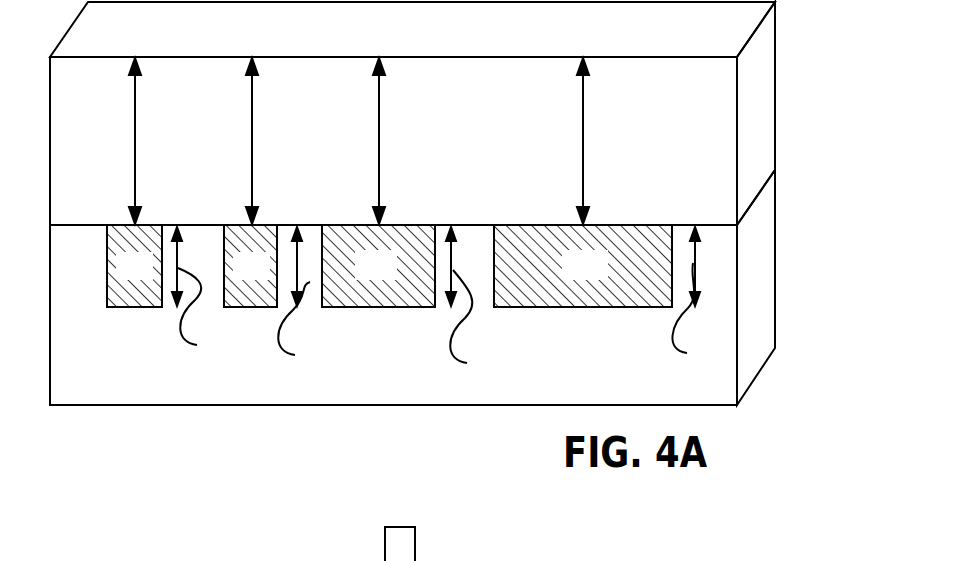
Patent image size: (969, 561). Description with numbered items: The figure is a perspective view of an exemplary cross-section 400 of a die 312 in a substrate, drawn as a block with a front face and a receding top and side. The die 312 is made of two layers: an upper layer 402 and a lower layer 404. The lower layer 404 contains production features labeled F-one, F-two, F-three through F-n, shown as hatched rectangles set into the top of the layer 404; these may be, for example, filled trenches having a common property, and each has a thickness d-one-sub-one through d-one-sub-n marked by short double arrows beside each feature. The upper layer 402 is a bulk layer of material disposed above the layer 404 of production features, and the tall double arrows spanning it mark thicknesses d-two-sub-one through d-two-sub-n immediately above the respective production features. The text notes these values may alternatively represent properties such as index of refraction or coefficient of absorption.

The die 312 is at (462, 41).
The cross-section 400 is at (442, 273).
The layer 402 is at (747, 127).
The layer 404 is at (747, 256).